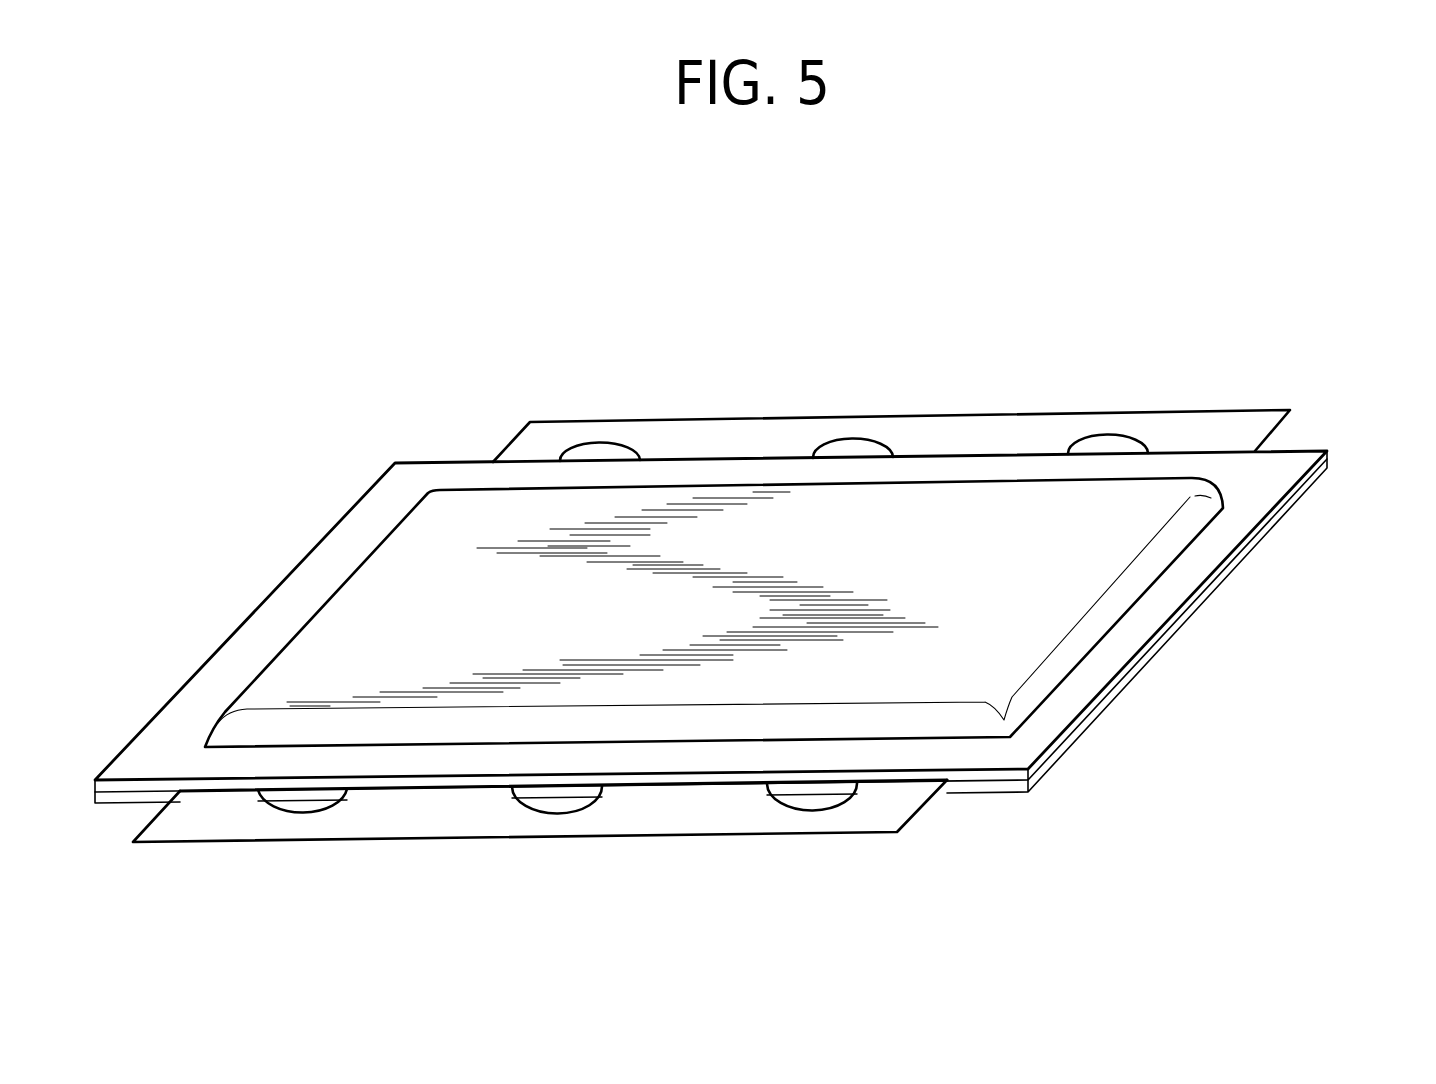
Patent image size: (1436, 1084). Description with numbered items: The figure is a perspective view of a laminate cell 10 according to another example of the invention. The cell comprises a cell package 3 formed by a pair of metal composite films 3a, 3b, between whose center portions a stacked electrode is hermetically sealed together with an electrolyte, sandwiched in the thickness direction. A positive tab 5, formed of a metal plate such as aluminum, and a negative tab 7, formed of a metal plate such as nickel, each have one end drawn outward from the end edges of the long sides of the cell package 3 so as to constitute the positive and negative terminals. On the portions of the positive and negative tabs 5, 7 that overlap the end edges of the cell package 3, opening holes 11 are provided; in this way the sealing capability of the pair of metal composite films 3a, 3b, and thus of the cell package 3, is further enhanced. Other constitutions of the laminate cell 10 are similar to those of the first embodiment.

The laminate cell 10 is at (1211, 292).
The cell package 3 is at (1362, 513).
The metal composite film 3a is at (1242, 515).
The metal composite film 3b is at (1235, 577).
The positive tab 5 is at (977, 432).
The negative tab 7 is at (655, 818).
The opening holes 11 is at (607, 445).